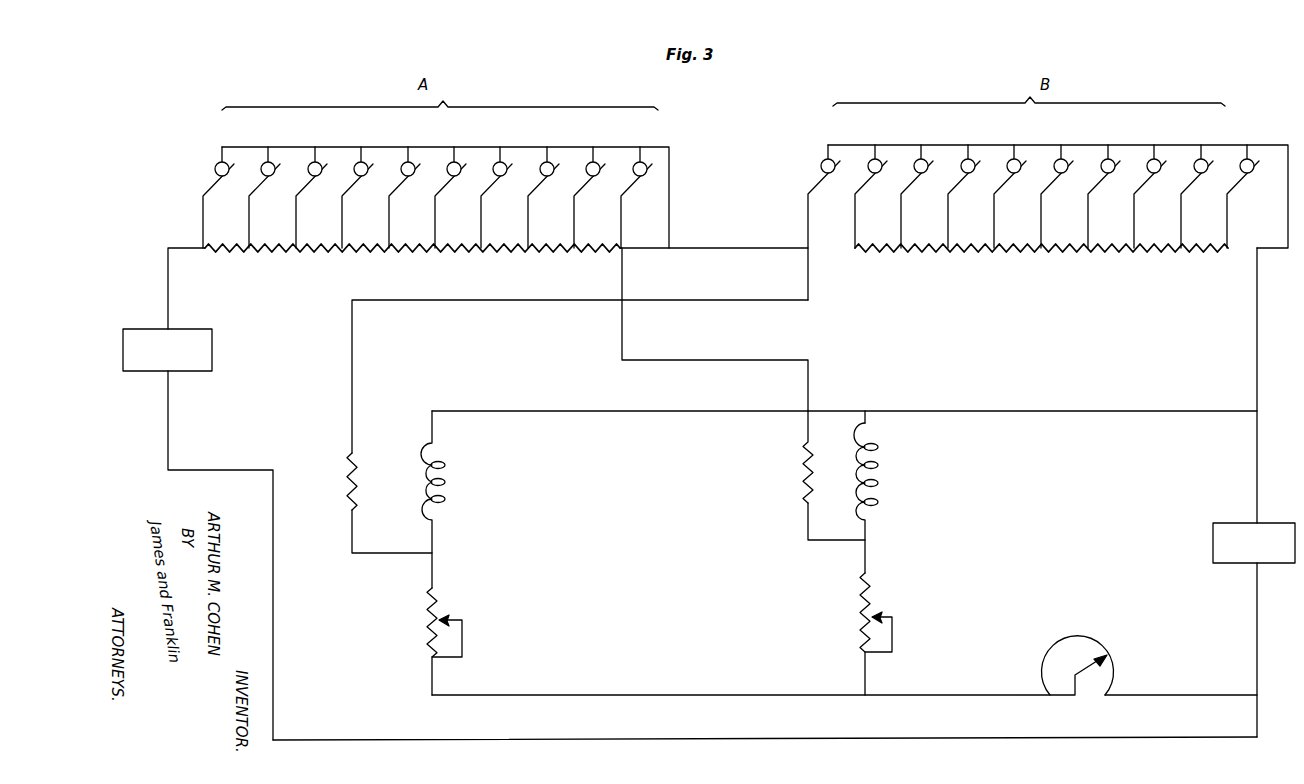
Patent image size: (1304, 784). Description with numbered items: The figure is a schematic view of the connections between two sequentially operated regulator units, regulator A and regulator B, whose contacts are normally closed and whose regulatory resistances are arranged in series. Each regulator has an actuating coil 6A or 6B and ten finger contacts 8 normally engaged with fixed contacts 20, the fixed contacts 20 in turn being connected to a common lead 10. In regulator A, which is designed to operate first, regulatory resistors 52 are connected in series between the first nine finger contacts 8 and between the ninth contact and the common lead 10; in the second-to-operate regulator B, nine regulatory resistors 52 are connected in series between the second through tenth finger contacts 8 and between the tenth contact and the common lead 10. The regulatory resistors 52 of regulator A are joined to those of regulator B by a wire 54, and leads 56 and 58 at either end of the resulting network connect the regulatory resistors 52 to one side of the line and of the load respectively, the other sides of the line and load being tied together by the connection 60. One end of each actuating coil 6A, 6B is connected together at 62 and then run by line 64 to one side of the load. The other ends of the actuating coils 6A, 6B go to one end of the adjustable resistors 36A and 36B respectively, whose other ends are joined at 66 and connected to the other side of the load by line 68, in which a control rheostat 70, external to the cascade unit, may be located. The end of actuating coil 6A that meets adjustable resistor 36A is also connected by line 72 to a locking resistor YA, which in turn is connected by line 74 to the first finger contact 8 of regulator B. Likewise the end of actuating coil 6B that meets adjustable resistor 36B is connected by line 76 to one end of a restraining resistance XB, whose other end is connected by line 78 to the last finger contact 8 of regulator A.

The finger contacts 8 is at (553, 168).
The common lead 10 is at (610, 147).
The fixed contacts 20 is at (410, 163).
The regulatory resistors 52 is at (368, 252).
The wire 54 is at (738, 248).
The lead 56 is at (180, 248).
The lead 58 is at (1288, 200).
The connection 60 is at (800, 738).
The junction 62 is at (865, 411).
The line 64 is at (1054, 411).
The junction 66 is at (866, 695).
The line 68 is at (1148, 695).
The control rheostat 70 is at (1080, 633).
The line 72 is at (386, 553).
The line 74 is at (723, 300).
The line 76 is at (822, 540).
The line 78 is at (717, 360).
The locking resistor YA is at (347, 486).
The restraining resistance XB is at (803, 486).
The actuating coil 6A is at (446, 478).
The actuating coil 6B is at (878, 464).
The adjustable resistor 36A is at (440, 608).
The adjustable resistor 36B is at (878, 601).